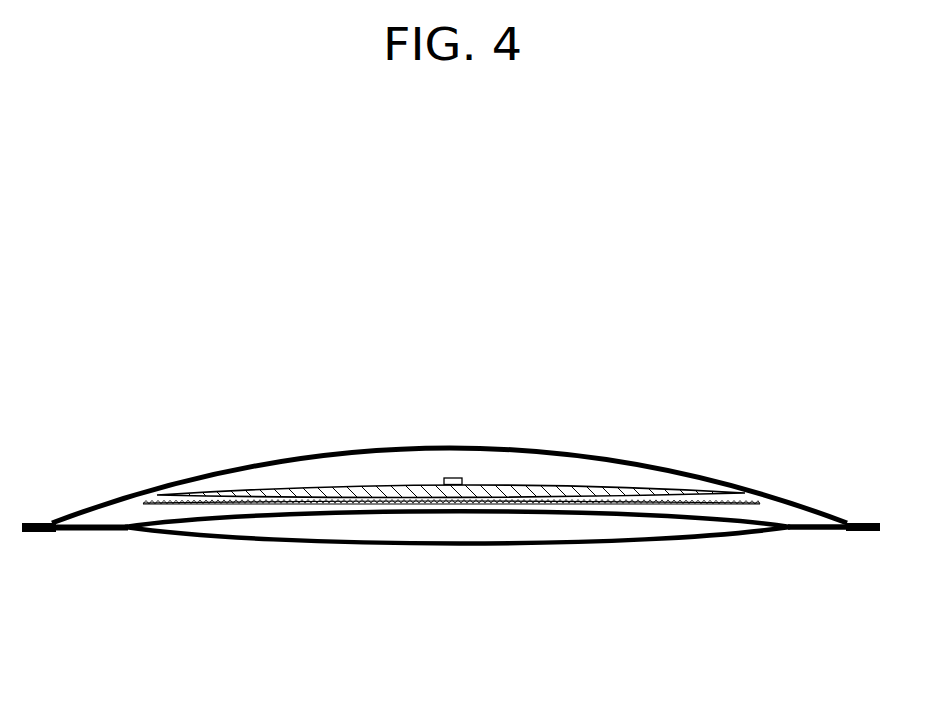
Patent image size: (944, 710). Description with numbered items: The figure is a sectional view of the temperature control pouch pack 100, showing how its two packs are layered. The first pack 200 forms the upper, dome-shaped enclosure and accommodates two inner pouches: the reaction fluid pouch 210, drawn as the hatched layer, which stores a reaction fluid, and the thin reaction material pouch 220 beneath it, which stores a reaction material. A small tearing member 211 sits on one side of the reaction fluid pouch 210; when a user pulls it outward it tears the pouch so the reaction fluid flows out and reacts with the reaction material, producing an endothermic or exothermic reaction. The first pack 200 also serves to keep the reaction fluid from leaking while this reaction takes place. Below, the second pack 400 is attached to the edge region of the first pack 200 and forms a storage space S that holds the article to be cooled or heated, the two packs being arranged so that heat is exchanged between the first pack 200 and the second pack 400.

The temperature control pouch pack 100 is at (160, 398).
The first pack 200 is at (503, 449).
The reaction fluid pouch 210 is at (318, 489).
The tearing member 211 is at (448, 478).
The reaction material pouch 220 is at (373, 502).
The second pack 400 is at (398, 545).
The storage space S is at (508, 527).